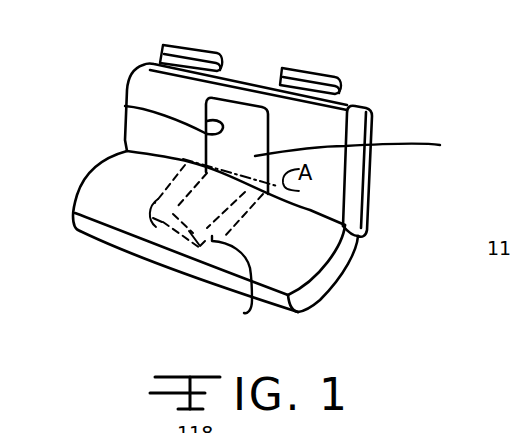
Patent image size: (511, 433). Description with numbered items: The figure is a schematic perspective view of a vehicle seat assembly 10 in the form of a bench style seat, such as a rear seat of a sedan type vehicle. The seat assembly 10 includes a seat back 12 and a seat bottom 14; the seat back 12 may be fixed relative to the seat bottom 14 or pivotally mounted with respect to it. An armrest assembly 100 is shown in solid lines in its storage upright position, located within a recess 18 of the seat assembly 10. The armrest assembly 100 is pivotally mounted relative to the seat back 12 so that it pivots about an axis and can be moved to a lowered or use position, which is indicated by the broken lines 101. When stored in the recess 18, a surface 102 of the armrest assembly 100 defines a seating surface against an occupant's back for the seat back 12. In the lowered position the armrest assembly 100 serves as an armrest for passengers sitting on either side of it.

The vehicle seat assembly 10 is at (434, 117).
The seat back 12 is at (362, 183).
The seat bottom 14 is at (331, 267).
The recess 18 is at (125, 106).
The armrest assembly 100 is at (256, 137).
The broken lines 101 is at (251, 309).
The surface 102 is at (440, 145).